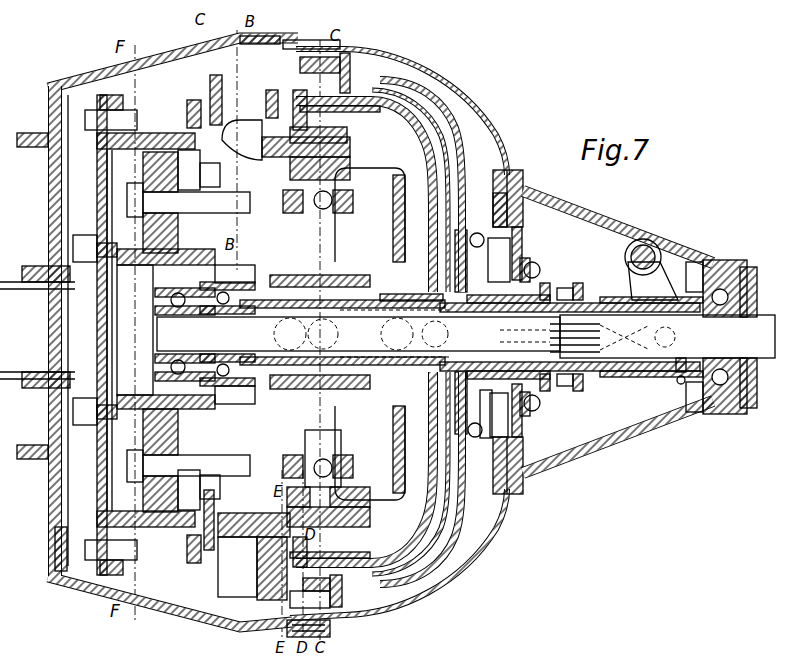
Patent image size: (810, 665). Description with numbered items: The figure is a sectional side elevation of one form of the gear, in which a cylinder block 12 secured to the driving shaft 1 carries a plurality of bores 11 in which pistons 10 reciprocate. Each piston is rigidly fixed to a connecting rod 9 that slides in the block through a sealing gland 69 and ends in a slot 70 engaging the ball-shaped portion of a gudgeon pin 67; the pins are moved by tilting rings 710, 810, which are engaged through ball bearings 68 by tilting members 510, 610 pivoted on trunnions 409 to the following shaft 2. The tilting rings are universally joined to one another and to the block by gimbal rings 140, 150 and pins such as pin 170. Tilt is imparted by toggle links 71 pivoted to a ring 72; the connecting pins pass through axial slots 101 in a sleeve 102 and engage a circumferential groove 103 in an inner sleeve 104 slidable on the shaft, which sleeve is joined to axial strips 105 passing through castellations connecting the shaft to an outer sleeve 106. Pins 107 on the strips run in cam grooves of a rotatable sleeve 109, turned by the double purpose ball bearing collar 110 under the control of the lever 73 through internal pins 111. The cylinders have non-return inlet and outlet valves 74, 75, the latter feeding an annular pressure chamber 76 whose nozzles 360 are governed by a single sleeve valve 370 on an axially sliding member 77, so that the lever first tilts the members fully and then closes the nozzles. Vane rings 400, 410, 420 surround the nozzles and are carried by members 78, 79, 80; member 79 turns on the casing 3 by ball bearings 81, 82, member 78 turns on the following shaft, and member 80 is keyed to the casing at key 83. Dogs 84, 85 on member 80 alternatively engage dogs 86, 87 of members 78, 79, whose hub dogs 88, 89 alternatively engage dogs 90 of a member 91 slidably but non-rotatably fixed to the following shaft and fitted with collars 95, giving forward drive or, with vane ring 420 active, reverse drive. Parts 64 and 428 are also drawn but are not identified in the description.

The driving shaft 1 is at (37, 296).
The following shaft 2 is at (466, 334).
The casing 3 is at (494, 131).
The connecting rods 9 is at (161, 335).
The pistons 10 is at (156, 341).
The bores 11 is at (97, 175).
The cylinder block 12 is at (58, 540).
The ring 64 is at (268, 90).
The gudgeon pins 67 is at (334, 201).
The ball bearings 68 is at (285, 270).
The sealing glands 69 is at (200, 170).
The slots 70 is at (275, 261).
The toggle links 71 is at (351, 333).
The ring 72 is at (435, 332).
The lever 73 is at (662, 268).
The inlet valves 74 is at (188, 112).
The outlet valves 75 is at (187, 330).
The annular pressure chamber 76 is at (224, 312).
The member 77 is at (436, 200).
The member 78 is at (442, 148).
The member 79 is at (396, 118).
The member 80 is at (354, 73).
The ball bearing 81 is at (477, 230).
The ball bearing 82 is at (560, 275).
The key 83 is at (336, 52).
The dog 84 is at (285, 612).
The dog 85 is at (352, 97).
The dog 86 is at (215, 642).
The dog 87 is at (363, 331).
The dog 88 is at (505, 285).
The dog 89 is at (556, 326).
The dogs 90 is at (537, 264).
The member 91 is at (587, 326).
The collars 95 is at (575, 292).
The axial slots 101 is at (415, 412).
The sleeve 102 is at (398, 289).
The circumferential groove 103 is at (415, 440).
The inner sleeve 104 is at (550, 338).
The axial strips 105 is at (565, 388).
The outer sleeve 106 is at (542, 414).
The pins 107 is at (676, 366).
The sleeve 109 is at (605, 296).
The ball bearing collar 110 is at (700, 405).
The pins 111 is at (677, 384).
The gimbal ring 140 is at (345, 490).
The gimbal ring 150 is at (400, 510).
The pin 170 is at (416, 128).
The nozzles 360 is at (254, 353).
The sleeve valve 370 is at (405, 100).
The vane ring 400 is at (274, 297).
The trunnions 409 is at (290, 329).
The vane ring 410 is at (287, 300).
The vane ring 420 is at (299, 332).
The cover 428 is at (205, 65).
The tilting member 510 is at (307, 332).
The tilting member 610 is at (413, 232).
The tilting ring 710 is at (235, 331).
The tilting ring 810 is at (375, 215).